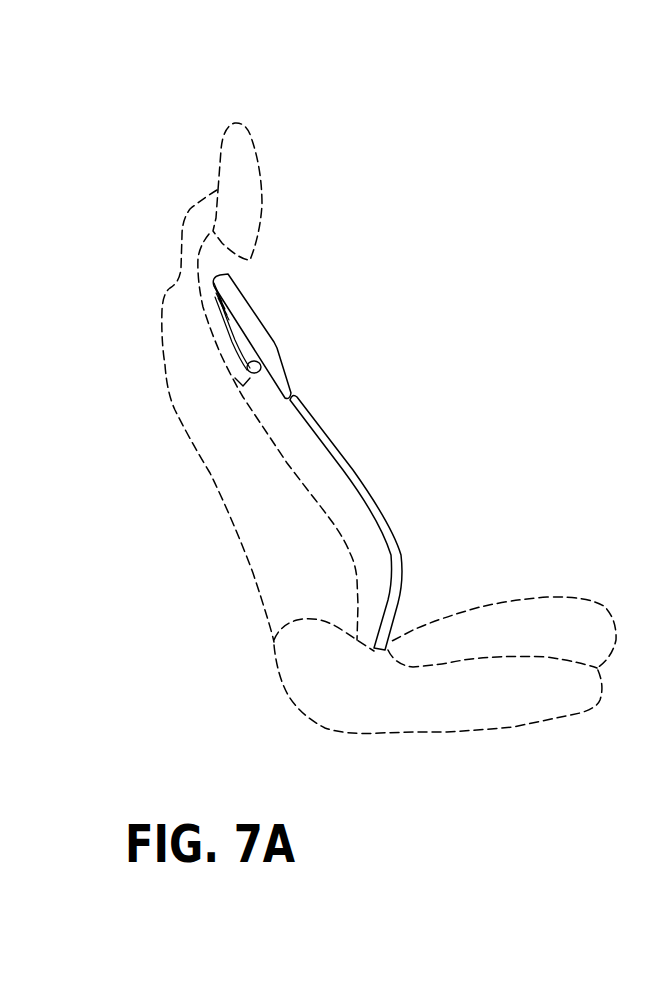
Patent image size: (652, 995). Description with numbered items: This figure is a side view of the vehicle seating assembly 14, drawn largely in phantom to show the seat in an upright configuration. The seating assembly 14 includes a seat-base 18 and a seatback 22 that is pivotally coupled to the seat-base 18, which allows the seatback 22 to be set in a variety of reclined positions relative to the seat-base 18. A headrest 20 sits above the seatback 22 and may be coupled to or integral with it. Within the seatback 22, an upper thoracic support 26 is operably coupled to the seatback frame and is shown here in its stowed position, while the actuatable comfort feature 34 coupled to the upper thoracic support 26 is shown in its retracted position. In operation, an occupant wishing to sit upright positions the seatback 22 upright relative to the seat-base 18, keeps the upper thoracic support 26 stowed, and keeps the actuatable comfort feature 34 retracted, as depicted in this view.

The seating assembly 14 is at (368, 151).
The seat-base 18 is at (371, 694).
The headrest 20 is at (253, 215).
The seatback 22 is at (278, 506).
The upper thoracic support 26 is at (227, 361).
The actuatable comfort feature 34 is at (240, 298).